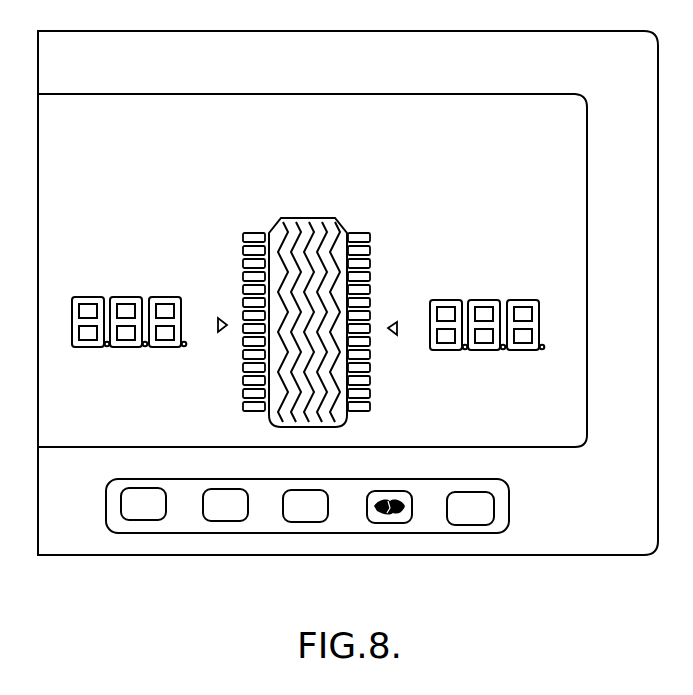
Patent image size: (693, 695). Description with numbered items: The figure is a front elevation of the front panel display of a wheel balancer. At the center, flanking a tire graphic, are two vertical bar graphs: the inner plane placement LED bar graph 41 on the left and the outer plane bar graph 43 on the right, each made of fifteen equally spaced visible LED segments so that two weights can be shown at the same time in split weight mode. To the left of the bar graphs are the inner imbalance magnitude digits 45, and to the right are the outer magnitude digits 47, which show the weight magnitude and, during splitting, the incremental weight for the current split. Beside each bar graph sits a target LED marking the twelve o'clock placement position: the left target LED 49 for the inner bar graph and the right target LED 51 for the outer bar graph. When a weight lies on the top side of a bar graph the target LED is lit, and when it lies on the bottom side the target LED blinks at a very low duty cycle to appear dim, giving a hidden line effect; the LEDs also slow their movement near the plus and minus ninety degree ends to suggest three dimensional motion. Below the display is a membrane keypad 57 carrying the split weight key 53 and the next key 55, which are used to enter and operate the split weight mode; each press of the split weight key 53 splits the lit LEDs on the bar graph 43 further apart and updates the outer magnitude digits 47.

The inner plane placement LED bar graph 41 is at (258, 232).
The outer plane bar graph 43 is at (362, 232).
The inner imbalance magnitude digits 45 is at (127, 295).
The outer magnitude digits 47 is at (493, 298).
The left target LED for 12 o'clock position 49 is at (220, 315).
The right target LED for 12 o'clock position 51 is at (400, 318).
The split weight key 53 is at (401, 538).
The next key 55 is at (250, 527).
The membrane keypad 57 is at (507, 540).